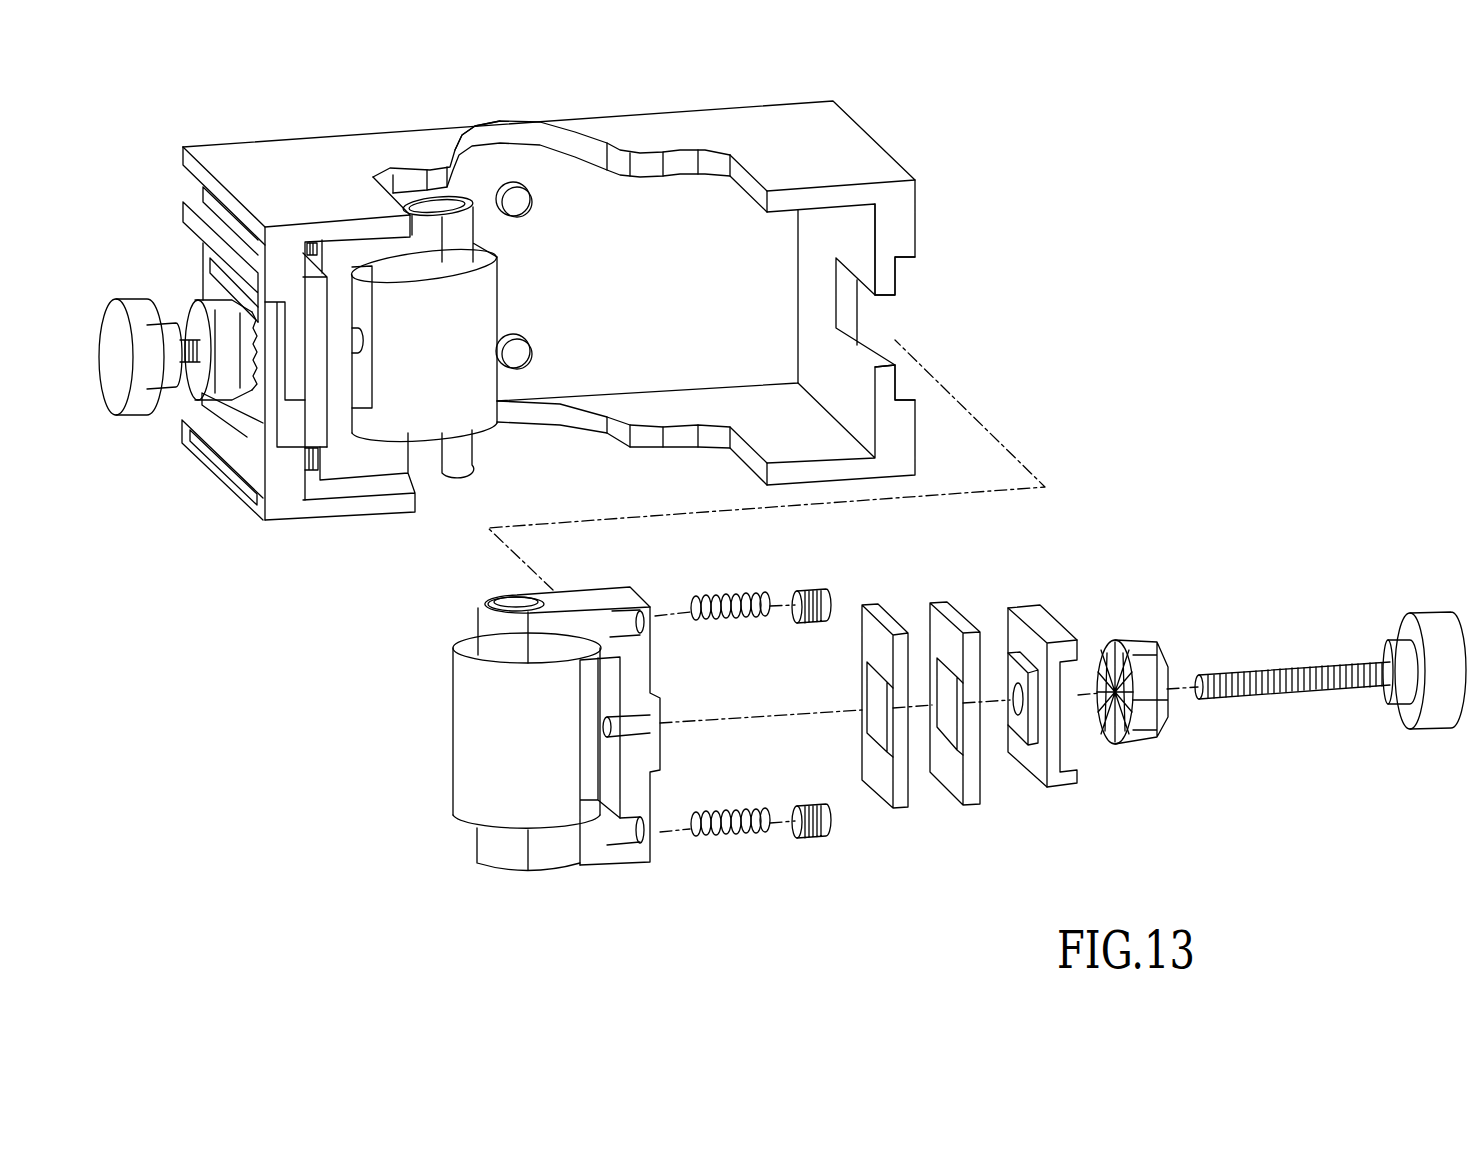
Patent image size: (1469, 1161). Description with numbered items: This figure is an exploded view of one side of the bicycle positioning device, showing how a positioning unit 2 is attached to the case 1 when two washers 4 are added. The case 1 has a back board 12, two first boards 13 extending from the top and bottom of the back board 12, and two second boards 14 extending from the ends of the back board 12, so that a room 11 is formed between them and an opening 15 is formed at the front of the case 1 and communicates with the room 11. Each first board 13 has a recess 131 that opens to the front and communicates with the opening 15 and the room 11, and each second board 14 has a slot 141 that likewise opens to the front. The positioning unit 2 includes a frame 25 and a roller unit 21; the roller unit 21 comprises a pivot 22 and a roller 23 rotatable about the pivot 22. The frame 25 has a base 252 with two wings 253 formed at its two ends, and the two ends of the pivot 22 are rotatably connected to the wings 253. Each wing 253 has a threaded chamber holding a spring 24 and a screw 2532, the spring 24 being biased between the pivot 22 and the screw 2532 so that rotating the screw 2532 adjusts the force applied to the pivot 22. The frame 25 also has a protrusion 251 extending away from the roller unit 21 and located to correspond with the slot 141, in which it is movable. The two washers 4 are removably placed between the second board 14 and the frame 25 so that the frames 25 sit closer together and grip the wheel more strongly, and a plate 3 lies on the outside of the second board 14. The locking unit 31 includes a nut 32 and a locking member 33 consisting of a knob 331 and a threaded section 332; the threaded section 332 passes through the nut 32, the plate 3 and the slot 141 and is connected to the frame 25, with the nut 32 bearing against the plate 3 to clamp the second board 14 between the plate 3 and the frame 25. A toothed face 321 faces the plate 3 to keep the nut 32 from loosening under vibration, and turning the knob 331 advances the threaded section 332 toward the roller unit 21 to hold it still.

The case 1 is at (562, 317).
The room 11 is at (590, 190).
The back board 12 is at (528, 165).
The first board 13 is at (270, 160).
The recess 131 is at (488, 128).
The second board 14 is at (895, 268).
The slot 141 is at (862, 333).
The opening 15 is at (378, 483).
The positioning unit 2 is at (867, 715).
The roller unit 21 is at (458, 707).
The pivot 22 is at (490, 613).
The roller 23 is at (462, 737).
The spring 24 is at (733, 598).
The frame 25 is at (603, 794).
The protrusion 251 is at (655, 750).
The base 252 is at (627, 783).
The wing 253 is at (528, 883).
The screw 2532 is at (808, 598).
The plate 3 is at (1040, 608).
The washer 4 is at (888, 608).
The locking unit 31 is at (1282, 632).
The nut 32 is at (1143, 677).
The toothed face 321 is at (1133, 745).
The locking member 33 is at (1331, 653).
The knob 331 is at (1433, 720).
The threaded section 332 is at (1312, 688).